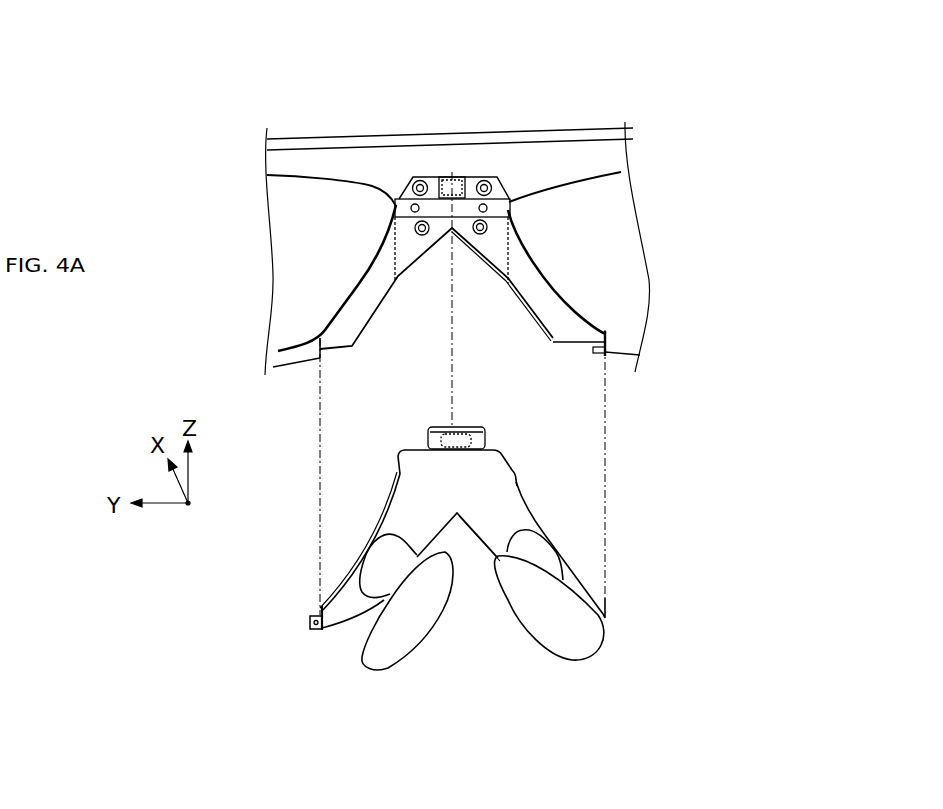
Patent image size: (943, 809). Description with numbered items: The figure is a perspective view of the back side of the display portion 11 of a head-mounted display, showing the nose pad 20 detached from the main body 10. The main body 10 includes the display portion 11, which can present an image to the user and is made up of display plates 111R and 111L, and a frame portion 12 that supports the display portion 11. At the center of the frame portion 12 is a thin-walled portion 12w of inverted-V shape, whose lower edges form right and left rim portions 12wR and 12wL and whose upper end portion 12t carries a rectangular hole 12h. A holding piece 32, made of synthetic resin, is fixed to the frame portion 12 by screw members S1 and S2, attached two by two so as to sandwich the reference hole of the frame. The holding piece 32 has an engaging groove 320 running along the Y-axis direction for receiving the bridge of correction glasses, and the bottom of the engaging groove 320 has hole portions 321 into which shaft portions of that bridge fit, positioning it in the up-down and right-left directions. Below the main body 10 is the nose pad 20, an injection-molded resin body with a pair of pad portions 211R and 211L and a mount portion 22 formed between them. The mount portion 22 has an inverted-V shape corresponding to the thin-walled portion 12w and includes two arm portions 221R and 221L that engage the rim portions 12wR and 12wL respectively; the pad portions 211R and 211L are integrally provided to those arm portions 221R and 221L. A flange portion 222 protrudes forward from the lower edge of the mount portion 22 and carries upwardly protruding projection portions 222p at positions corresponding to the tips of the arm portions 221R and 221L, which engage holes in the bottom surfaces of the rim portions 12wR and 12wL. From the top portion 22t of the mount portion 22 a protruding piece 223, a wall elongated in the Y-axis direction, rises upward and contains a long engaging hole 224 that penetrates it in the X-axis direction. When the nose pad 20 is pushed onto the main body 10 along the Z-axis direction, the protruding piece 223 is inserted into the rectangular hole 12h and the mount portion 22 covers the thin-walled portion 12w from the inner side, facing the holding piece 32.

The main body 10 is at (614, 110).
The display portion 11 is at (571, 57).
The display plate 111L is at (347, 198).
The display plate 111R is at (555, 203).
The frame portion 12 is at (301, 139).
The rectangular hole 12h is at (427, 175).
The upper end portion 12t is at (458, 175).
The screw member S1 is at (463, 152).
The engaging groove 320 is at (391, 213).
The hole portion 321 is at (515, 222).
The holding piece 32 is at (450, 263).
The screw member S2 is at (462, 393).
The thin-walled portion 12w is at (383, 296).
The rim portion 12wL is at (368, 336).
The rim portion 12wR is at (538, 341).
The nose pad 20 is at (663, 628).
The mount portion 22 is at (503, 492).
The top portion 22t is at (472, 428).
The protruding piece 223 is at (460, 421).
The engaging hole 224 is at (430, 442).
The arm portion 221L is at (320, 603).
The arm portion 221R is at (584, 582).
The flange portion 222 is at (316, 638).
The projection portion 222p is at (310, 624).
The pad portion 211L is at (407, 648).
The pad portion 211R is at (593, 647).